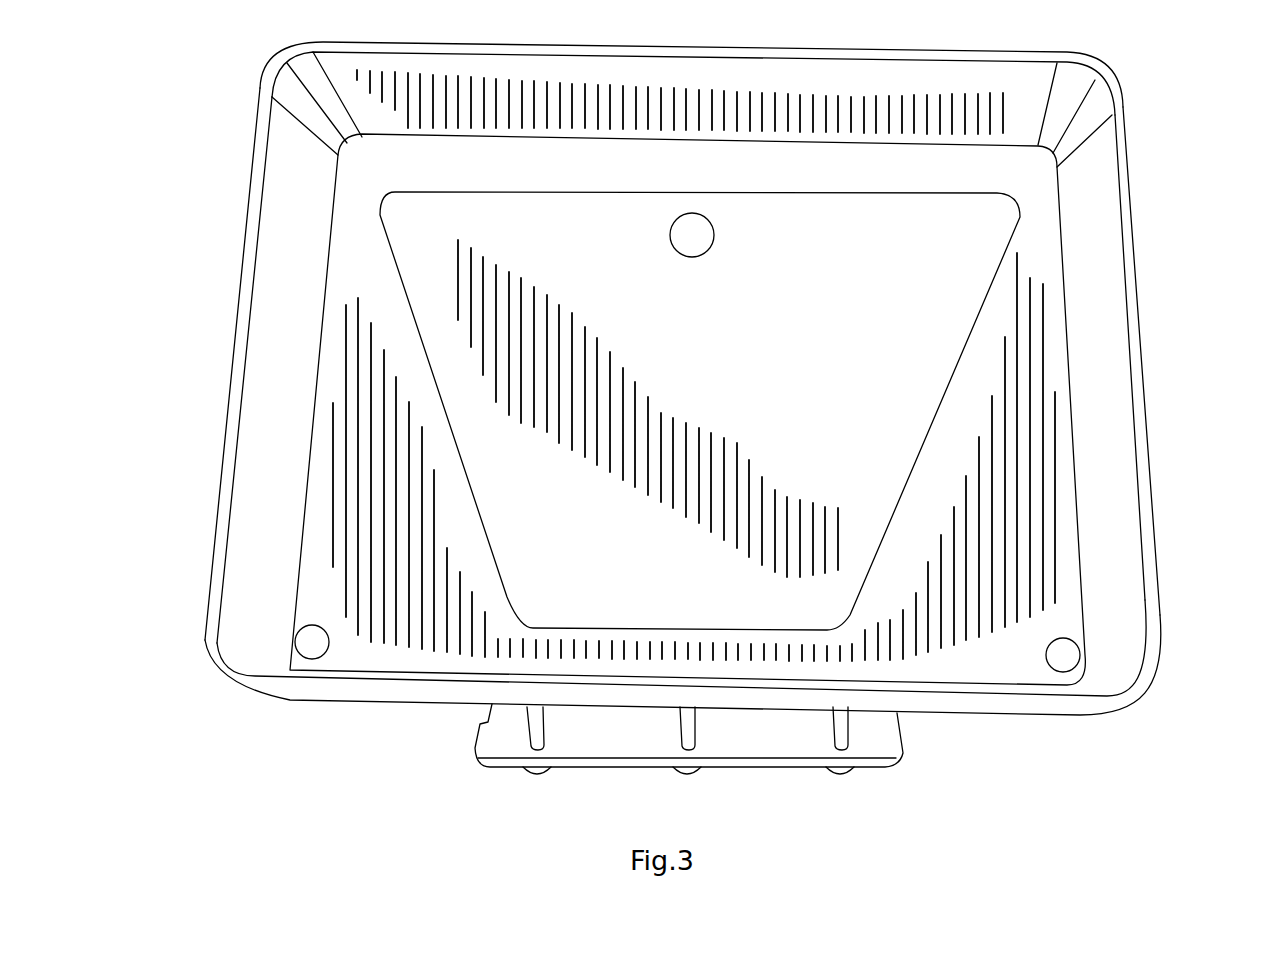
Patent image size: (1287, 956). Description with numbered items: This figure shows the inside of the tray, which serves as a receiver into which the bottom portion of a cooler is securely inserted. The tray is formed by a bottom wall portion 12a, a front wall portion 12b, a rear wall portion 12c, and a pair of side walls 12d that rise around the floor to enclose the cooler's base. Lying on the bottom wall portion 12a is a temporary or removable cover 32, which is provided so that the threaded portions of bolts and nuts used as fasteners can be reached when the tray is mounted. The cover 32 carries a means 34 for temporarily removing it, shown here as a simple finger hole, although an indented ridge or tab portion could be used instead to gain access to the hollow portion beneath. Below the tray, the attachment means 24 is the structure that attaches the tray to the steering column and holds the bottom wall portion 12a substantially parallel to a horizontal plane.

The bottom wall portion 12a is at (1027, 673).
The front wall portion 12b is at (992, 705).
The rear wall portion 12c is at (837, 75).
The side walls 12d is at (287, 250).
The attachment means 24 is at (447, 757).
The temporary cover 32 is at (823, 341).
The means for temporarily removing cover 34 is at (695, 238).